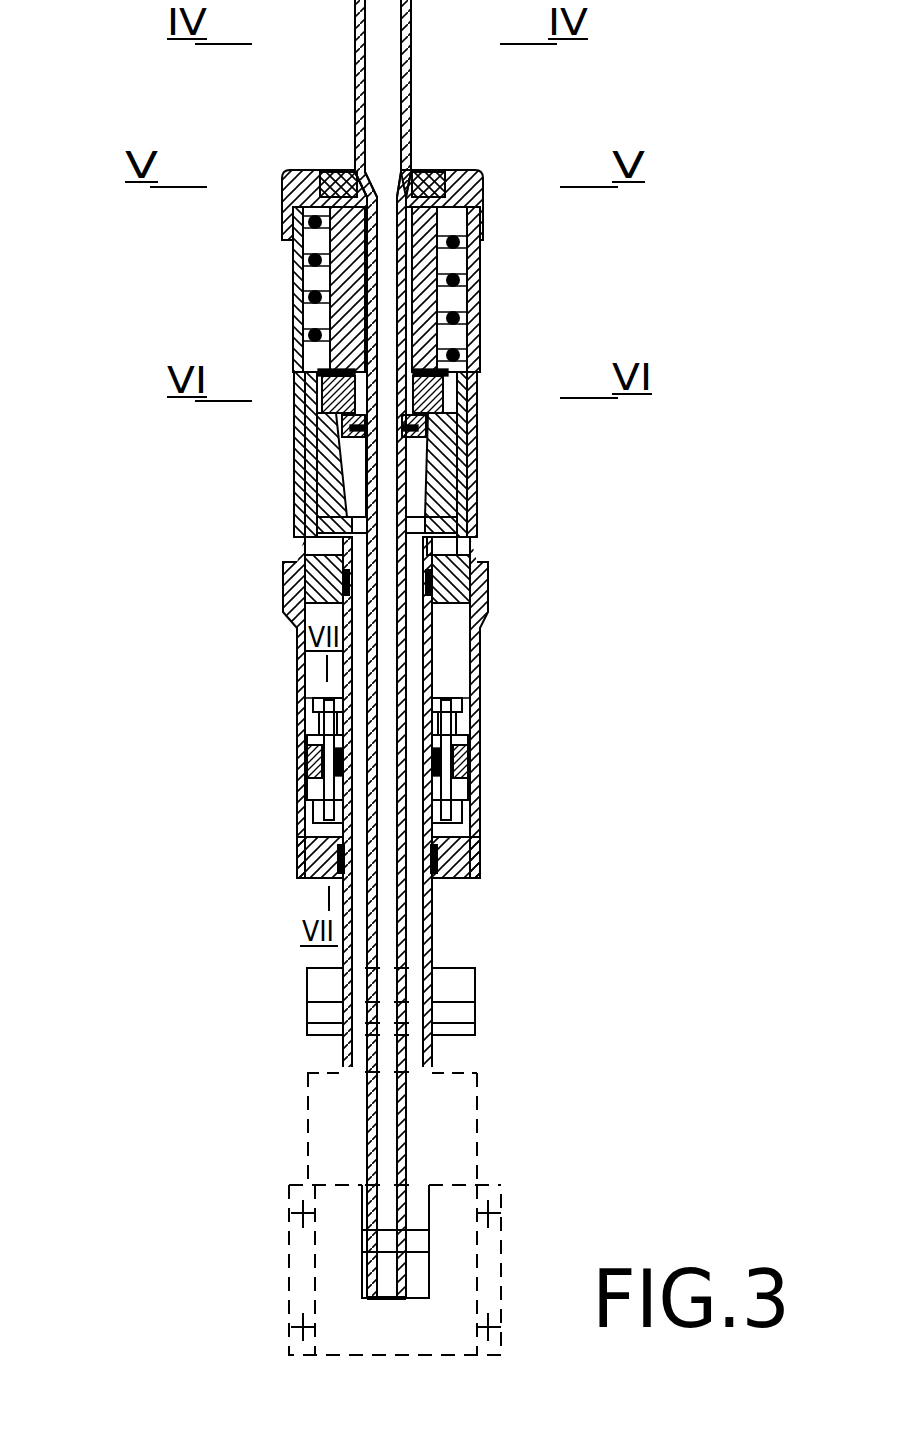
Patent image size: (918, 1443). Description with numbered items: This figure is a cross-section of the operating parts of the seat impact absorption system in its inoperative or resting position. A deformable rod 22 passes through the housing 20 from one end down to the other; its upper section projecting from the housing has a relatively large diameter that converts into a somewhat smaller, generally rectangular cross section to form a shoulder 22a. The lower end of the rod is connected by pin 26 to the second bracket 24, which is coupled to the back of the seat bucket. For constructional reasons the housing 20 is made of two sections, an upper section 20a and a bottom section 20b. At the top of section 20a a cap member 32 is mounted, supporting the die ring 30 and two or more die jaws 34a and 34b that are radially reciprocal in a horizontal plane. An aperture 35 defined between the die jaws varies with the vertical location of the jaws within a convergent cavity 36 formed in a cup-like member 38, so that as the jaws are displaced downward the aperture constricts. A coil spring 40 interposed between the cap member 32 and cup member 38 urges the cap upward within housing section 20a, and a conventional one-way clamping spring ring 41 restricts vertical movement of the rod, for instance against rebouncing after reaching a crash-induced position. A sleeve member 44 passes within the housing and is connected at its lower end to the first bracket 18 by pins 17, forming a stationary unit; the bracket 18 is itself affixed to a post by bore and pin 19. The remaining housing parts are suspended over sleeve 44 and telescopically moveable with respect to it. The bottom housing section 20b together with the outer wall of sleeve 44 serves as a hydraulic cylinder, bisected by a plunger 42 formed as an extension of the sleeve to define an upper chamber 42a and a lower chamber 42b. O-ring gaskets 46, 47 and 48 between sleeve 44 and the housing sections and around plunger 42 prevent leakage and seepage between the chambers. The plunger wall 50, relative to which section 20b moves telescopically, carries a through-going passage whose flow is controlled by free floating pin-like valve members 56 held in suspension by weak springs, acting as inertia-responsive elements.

The pins 17 is at (307, 1015).
The first bracket 18 is at (322, 1124).
The bore and pin 19 is at (321, 1050).
The housing 20 is at (518, 275).
The housing section 20a is at (480, 292).
The bottom housing section 20b is at (470, 705).
The deformable rod 22 is at (377, 50).
The shoulder 22a is at (415, 182).
The second bracket 24 is at (298, 1291).
The pin 26 is at (380, 1242).
The die ring 30 is at (340, 170).
The cap member 32 is at (480, 185).
The die jaw 34a is at (440, 385).
The die jaw 34b is at (320, 385).
The aperture 35 is at (430, 405).
The convergent cavity 36 is at (438, 500).
The cup-like member 38 is at (440, 530).
The coil spring 40 is at (480, 235).
The one-way clamping spring ring 41 is at (357, 437).
The plunger 42 is at (596, 693).
The upper chamber 42a is at (452, 692).
The lower chamber 42b is at (465, 822).
The sleeve member 44 is at (432, 655).
The gasket 46 is at (486, 595).
The gasket 47 is at (466, 748).
The gasket 48 is at (465, 855).
The plunger wall 50 is at (470, 790).
The valve member 56 is at (318, 785).